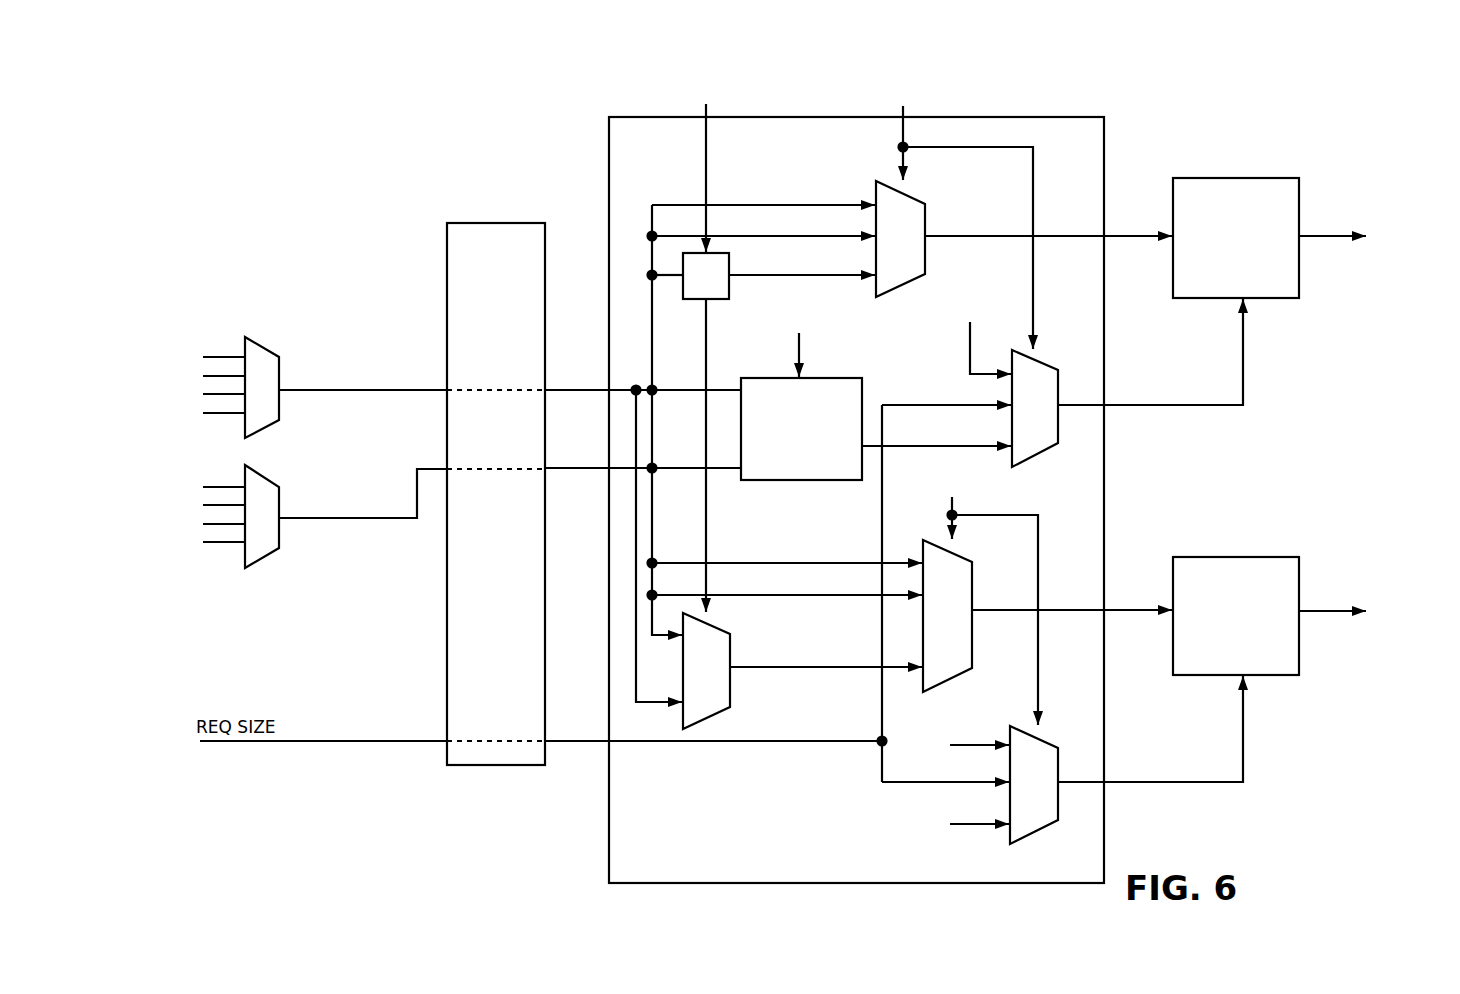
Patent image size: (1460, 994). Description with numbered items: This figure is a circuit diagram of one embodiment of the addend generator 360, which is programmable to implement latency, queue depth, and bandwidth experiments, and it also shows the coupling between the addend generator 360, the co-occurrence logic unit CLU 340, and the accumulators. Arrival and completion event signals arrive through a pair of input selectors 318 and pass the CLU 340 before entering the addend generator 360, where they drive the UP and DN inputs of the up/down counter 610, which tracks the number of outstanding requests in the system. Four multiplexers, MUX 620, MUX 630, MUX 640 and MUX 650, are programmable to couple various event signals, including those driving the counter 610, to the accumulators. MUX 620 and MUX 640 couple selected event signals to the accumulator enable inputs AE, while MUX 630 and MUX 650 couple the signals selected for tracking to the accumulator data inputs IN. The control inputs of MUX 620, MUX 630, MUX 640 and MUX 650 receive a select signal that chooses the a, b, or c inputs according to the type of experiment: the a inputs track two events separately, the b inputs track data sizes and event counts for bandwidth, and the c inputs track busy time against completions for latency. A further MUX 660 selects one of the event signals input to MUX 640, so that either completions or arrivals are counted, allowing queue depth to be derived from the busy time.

The input selectors 318 is at (302, 427).
The co-occurrence logic unit (CLU) 340 is at (496, 494).
The addend generator 360 is at (1001, 116).
The up/down counter 610 is at (801, 429).
The MUX 620 is at (873, 190).
The MUX 630 is at (1060, 385).
The MUX 640 is at (973, 648).
The MUX 650 is at (1060, 808).
The MUX 660 is at (731, 680).